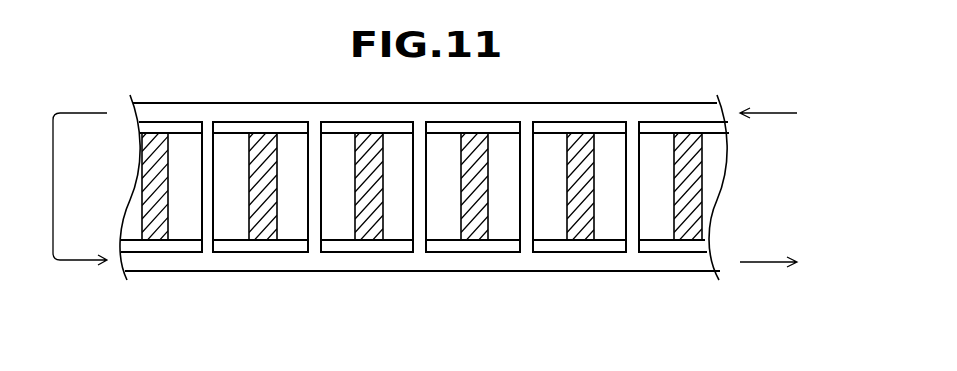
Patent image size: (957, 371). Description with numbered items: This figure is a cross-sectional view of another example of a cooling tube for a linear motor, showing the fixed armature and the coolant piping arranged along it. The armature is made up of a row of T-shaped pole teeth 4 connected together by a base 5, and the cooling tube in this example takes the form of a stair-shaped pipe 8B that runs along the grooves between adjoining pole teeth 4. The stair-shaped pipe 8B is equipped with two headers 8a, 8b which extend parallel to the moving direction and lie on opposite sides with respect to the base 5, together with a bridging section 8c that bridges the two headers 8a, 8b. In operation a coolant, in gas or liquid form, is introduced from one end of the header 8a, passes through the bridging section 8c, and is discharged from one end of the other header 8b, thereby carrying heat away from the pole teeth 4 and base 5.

The pole teeth 4 is at (277, 213).
The base 5 is at (227, 227).
The header 8a is at (477, 115).
The header 8b is at (493, 260).
The bridging section 8c is at (539, 217).
The stair-shaped pipe 8B is at (423, 222).